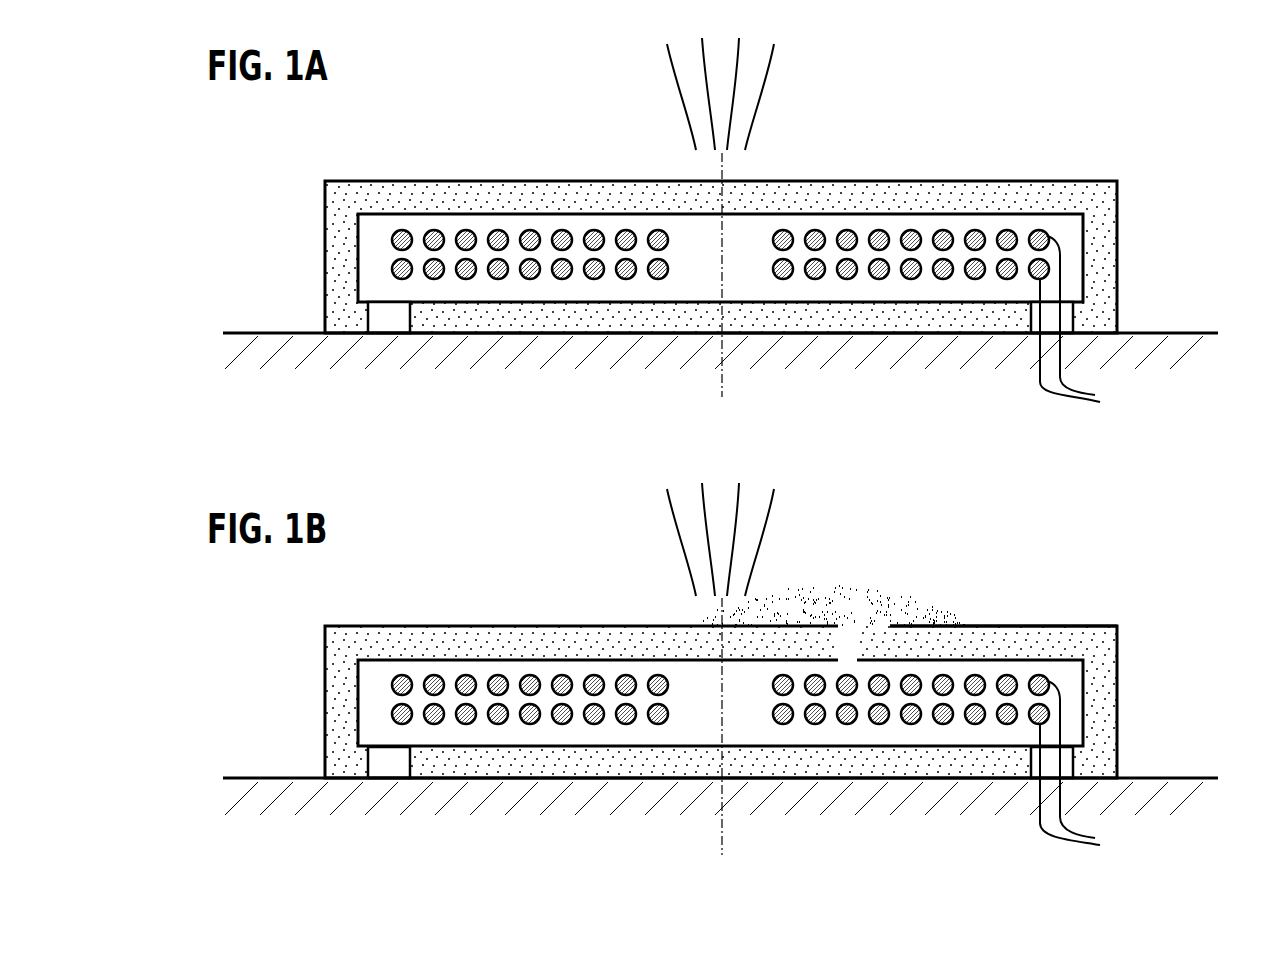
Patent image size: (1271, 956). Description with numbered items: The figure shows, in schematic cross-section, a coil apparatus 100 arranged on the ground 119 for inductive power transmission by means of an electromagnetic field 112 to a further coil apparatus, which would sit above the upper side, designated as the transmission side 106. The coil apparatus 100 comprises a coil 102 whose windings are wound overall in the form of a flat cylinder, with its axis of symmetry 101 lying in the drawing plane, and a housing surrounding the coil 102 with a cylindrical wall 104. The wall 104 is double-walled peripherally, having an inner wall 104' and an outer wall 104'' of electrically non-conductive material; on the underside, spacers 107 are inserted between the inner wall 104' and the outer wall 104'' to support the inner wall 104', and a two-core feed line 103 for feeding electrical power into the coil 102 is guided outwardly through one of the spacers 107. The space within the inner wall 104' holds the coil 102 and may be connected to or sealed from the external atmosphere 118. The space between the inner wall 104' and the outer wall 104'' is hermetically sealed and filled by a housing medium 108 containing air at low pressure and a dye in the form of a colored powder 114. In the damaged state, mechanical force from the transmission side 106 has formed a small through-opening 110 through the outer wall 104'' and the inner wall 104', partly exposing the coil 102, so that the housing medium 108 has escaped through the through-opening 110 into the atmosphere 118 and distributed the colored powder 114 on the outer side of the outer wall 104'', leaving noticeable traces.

In FIG. 1A, the coil apparatus 100 is at (780, 240).
In FIG. 1B, the coil apparatus 100 is at (780, 667).
In FIG. 1A, the axis of symmetry 101 is at (720, 378).
In FIG. 1B, the axis of symmetry 101 is at (721, 822).
In FIG. 1A, the coil 102 is at (658, 279).
In FIG. 1B, the coil 102 is at (658, 723).
In FIG. 1A, the two-core feed line 103 is at (1089, 323).
In FIG. 1B, the two-core feed line 103 is at (1089, 768).
In FIG. 1A, the cylindrical wall 104 is at (721, 200).
In FIG. 1B, the cylindrical wall 104 is at (721, 645).
In FIG. 1A, the inner wall 104' is at (720, 185).
In FIG. 1B, the inner wall 104' is at (720, 629).
In FIG. 1A, the outer wall 104'' is at (721, 223).
In FIG. 1B, the outer wall 104'' is at (721, 668).
In FIG. 1A, the transmission side 106 is at (393, 181).
In FIG. 1B, the transmission side 106 is at (393, 626).
In FIG. 1A, the spacers 107 is at (368, 318).
In FIG. 1B, the spacers 107 is at (368, 762).
In FIG. 1B, the housing medium 108 is at (1048, 643).
In FIG. 1B, the through-opening 110 is at (873, 625).
In FIG. 1A, the electromagnetic field 112 is at (750, 125).
In FIG. 1B, the electromagnetic field 112 is at (763, 512).
In FIG. 1A, the colored powder 114 is at (890, 193).
In FIG. 1B, the colored powder 114 is at (832, 607).
In FIG. 1A, the atmosphere 118 is at (273, 247).
In FIG. 1B, the atmosphere 118 is at (273, 717).
In FIG. 1A, the ground 119 is at (1178, 333).
In FIG. 1B, the ground 119 is at (1178, 778).